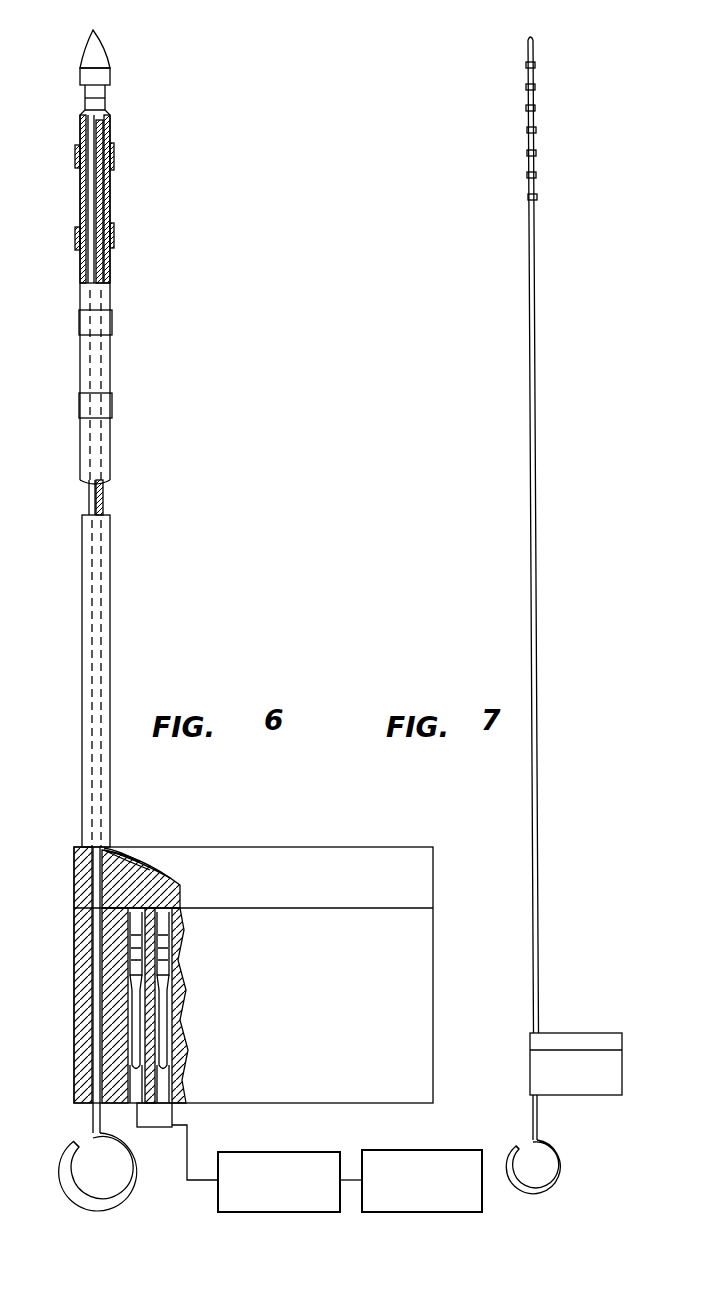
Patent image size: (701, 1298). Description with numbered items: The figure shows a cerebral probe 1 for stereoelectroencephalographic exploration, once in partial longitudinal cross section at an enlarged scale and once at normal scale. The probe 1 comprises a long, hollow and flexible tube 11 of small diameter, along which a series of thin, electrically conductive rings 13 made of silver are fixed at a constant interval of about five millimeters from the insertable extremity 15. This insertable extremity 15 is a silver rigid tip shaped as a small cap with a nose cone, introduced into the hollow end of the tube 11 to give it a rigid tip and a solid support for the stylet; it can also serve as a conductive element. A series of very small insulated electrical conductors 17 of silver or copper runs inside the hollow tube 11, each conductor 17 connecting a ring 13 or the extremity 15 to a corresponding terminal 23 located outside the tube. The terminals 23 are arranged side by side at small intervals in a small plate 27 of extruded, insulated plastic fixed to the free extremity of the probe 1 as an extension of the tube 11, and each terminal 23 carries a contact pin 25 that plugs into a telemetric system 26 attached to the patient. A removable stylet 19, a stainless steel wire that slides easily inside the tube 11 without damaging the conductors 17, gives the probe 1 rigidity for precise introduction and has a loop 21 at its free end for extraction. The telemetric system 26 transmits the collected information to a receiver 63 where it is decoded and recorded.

In FIG. 6, the cerebral probe 1 is at (170, 434).
In FIG. 7, the cerebral probe 1 is at (555, 460).
In FIG. 6, the hollow flexible tube 11 is at (110, 580).
In FIG. 7, the hollow flexible tube 11 is at (540, 540).
In FIG. 6, the electrically conductive rings 13 is at (77, 155).
In FIG. 7, the electrically conductive rings 13 is at (535, 108).
In FIG. 6, the insertable extremity 15 is at (98, 77).
In FIG. 7, the insertable extremity 15 is at (533, 38).
In FIG. 6, the insulated electrical conductors 17 is at (105, 190).
In FIG. 6, the removable stylet 19 is at (92, 194).
In FIG. 7, the removable stylet 19 is at (538, 1120).
In FIG. 6, the loop 21 is at (128, 1190).
In FIG. 7, the loop 21 is at (562, 1165).
In FIG. 6, the terminal 23 is at (162, 960).
In FIG. 6, the contact pin 25 is at (166, 1025).
In FIG. 6, the telemetric system 26 is at (272, 1212).
In FIG. 6, the small plate 27 is at (300, 1085).
In FIG. 7, the small plate 27 is at (612, 1062).
In FIG. 6, the receiver 63 is at (405, 1212).